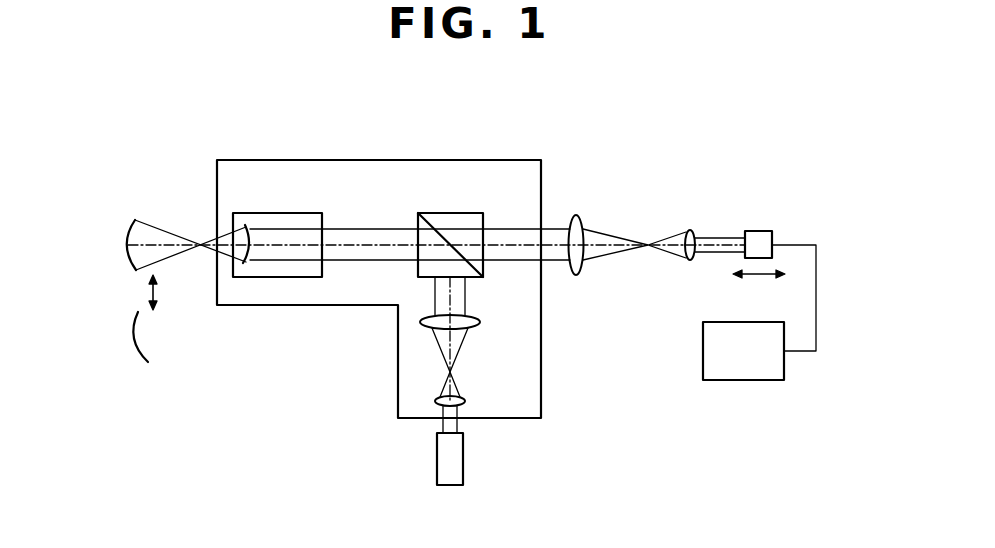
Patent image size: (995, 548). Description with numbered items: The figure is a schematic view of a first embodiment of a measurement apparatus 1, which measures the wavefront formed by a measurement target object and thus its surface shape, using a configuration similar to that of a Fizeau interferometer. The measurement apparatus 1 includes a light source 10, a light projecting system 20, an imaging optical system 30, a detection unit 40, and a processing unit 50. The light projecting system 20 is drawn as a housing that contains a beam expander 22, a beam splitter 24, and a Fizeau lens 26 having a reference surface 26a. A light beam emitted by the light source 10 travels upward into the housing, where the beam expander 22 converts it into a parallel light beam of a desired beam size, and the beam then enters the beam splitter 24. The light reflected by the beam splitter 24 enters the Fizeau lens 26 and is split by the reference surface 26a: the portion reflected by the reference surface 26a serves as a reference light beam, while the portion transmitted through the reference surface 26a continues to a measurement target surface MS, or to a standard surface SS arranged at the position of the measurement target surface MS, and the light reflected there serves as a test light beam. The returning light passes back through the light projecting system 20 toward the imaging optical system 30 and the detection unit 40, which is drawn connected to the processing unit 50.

The measurement apparatus 1 is at (494, 116).
The light source 10 is at (464, 462).
The light projecting system 20 is at (256, 305).
The beam expander 22 is at (487, 317).
The beam splitter 24 is at (455, 211).
The Fizeau lens 26 is at (311, 213).
The reference surface 26a is at (243, 216).
The imaging optical system 30 is at (693, 206).
The detection unit 40 is at (759, 230).
The processing unit 50 is at (746, 382).
The measurement target surface MS is at (131, 215).
The standard surface SS is at (128, 325).